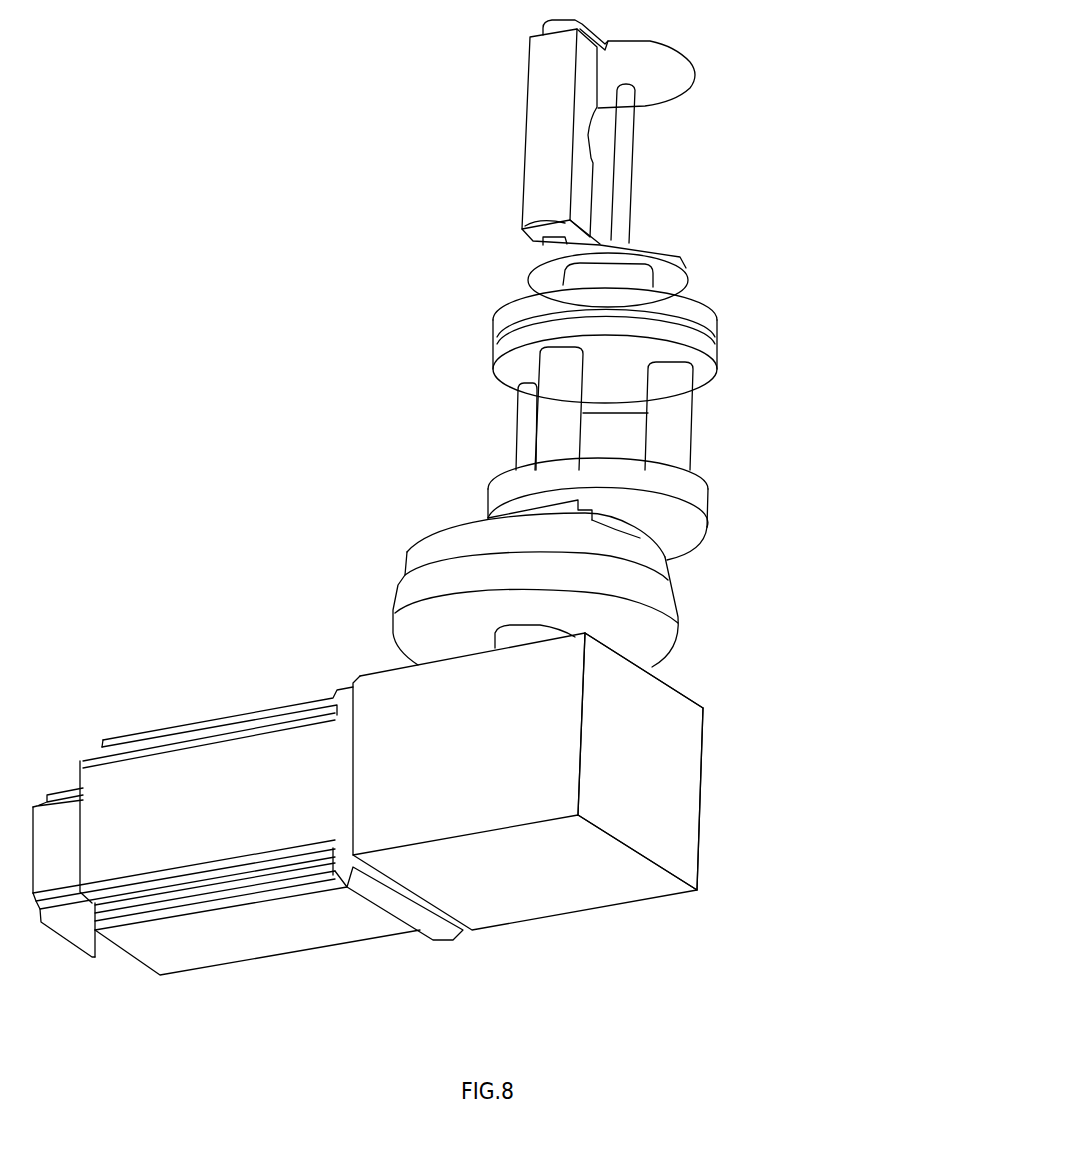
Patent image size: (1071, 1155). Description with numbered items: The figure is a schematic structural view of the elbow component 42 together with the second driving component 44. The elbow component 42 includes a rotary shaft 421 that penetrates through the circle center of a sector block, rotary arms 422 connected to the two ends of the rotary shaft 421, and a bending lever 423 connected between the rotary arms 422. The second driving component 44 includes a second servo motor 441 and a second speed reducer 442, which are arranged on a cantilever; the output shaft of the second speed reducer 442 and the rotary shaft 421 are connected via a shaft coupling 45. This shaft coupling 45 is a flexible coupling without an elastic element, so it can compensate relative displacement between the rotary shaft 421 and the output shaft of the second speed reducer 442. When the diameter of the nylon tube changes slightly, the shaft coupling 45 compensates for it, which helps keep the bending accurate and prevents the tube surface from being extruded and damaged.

The elbow component 42 is at (508, 71).
The rotary shaft 421 is at (622, 186).
The rotary arms 422 is at (673, 85).
The bending lever 423 is at (540, 150).
The shaft coupling 45 is at (540, 433).
The second driving component 44 is at (682, 717).
The second servo motor 441 is at (242, 771).
The second speed reducer 442 is at (650, 800).